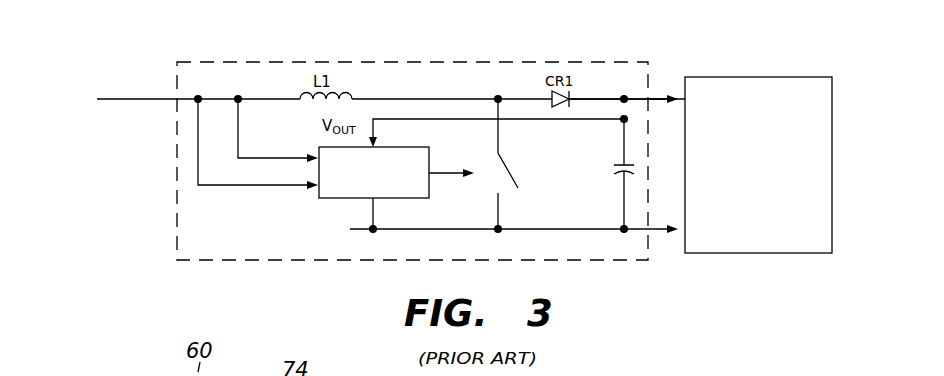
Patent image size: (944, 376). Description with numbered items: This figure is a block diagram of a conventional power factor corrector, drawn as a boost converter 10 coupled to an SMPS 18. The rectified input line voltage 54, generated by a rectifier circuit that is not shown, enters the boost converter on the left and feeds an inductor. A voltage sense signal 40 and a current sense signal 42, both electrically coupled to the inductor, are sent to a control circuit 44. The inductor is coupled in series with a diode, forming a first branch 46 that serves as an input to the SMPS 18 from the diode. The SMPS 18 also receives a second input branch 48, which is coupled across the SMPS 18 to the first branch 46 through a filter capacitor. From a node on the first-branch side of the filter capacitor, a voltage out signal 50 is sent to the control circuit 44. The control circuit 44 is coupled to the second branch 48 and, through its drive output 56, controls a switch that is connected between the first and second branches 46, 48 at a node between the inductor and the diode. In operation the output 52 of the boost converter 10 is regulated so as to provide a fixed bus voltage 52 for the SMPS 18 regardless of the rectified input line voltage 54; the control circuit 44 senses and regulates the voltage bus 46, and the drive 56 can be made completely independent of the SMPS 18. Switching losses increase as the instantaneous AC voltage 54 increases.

The power factor correction circuit 10 is at (209, 62).
The SMPS 18 is at (735, 77).
The voltage sense signal 40 is at (197, 153).
The current sense signal 42 is at (273, 160).
The control circuit 44 is at (333, 199).
The first branch 46 is at (598, 99).
The second input branch 48 is at (577, 231).
The voltage out signal 50 is at (560, 122).
The output 52 is at (654, 103).
The rectified input line voltage 54 is at (120, 98).
The drive output 56 is at (447, 171).